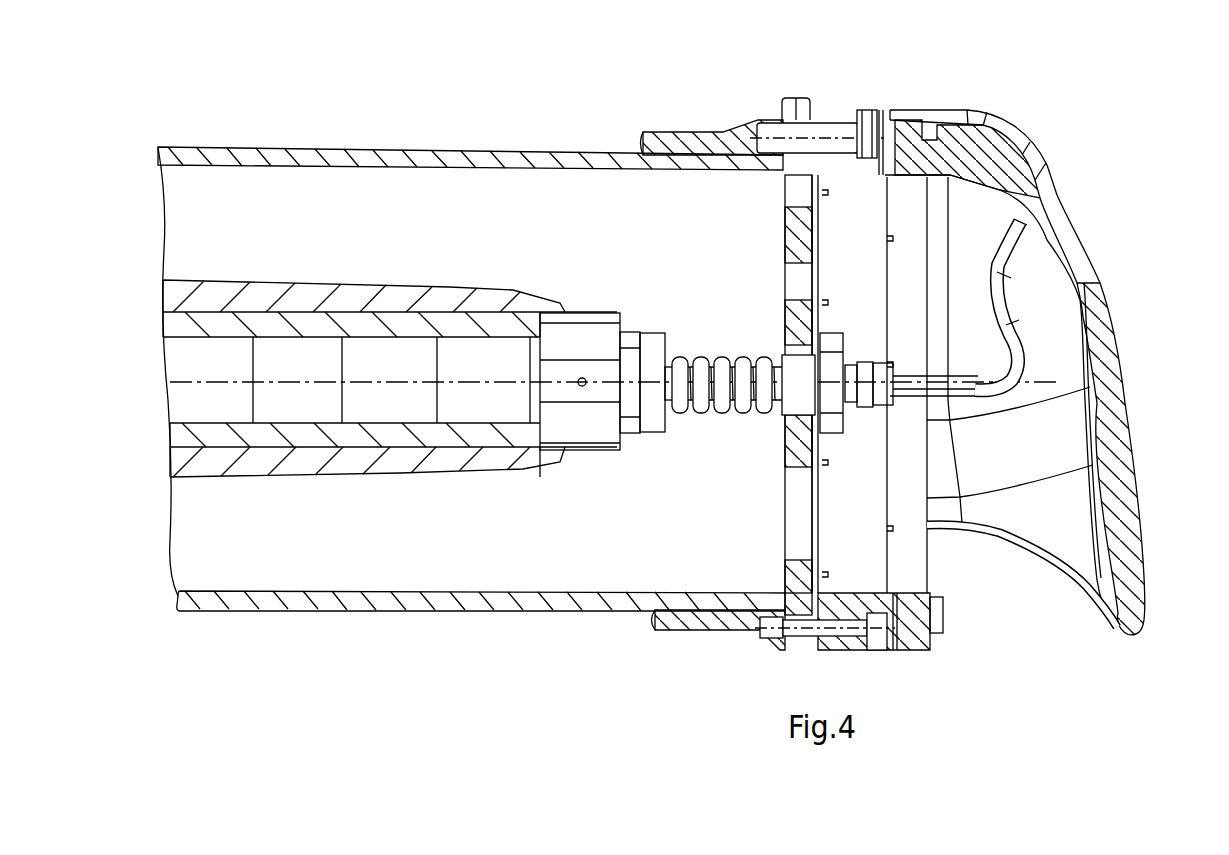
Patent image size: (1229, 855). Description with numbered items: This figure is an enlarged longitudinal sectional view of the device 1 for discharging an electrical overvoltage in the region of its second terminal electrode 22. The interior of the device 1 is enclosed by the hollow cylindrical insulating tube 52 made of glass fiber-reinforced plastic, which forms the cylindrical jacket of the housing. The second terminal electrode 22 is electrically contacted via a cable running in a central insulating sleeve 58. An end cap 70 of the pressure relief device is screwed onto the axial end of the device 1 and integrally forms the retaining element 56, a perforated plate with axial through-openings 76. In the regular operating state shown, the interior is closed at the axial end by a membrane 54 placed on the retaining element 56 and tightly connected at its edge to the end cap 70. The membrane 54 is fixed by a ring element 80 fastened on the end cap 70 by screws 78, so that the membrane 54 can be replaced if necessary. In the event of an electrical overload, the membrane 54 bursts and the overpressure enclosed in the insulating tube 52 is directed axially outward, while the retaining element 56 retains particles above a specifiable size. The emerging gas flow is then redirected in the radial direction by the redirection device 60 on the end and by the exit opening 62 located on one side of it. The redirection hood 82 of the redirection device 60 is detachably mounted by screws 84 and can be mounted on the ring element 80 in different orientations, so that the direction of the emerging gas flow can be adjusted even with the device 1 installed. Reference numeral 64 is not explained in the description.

The device 1 is at (395, 665).
The second terminal electrode 22 is at (573, 432).
The insulating tube 52 is at (272, 150).
The membrane 54 is at (823, 273).
The retaining element 56 is at (785, 325).
The central insulating sleeve 58 is at (717, 415).
The redirection device 60 is at (1110, 195).
The exit opening 62 is at (1027, 560).
The tube 64 is at (1082, 328).
The end cap 70 is at (733, 140).
The axial through-openings 76 is at (800, 278).
The screws 78 is at (873, 122).
The ring element 80 is at (837, 120).
The redirection hood 82 is at (1103, 340).
The screws 84 is at (944, 612).